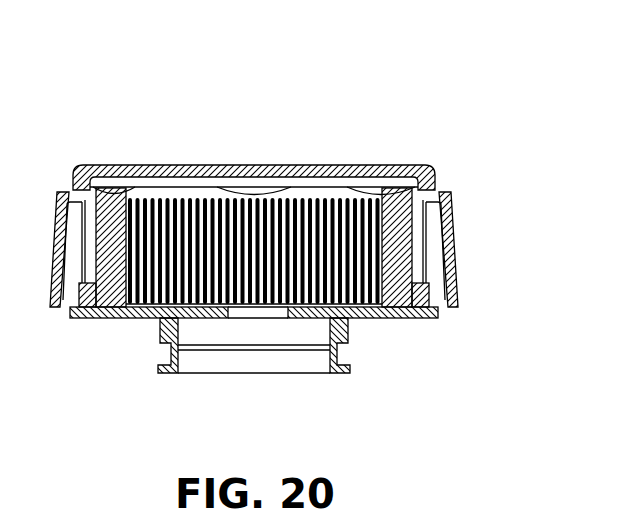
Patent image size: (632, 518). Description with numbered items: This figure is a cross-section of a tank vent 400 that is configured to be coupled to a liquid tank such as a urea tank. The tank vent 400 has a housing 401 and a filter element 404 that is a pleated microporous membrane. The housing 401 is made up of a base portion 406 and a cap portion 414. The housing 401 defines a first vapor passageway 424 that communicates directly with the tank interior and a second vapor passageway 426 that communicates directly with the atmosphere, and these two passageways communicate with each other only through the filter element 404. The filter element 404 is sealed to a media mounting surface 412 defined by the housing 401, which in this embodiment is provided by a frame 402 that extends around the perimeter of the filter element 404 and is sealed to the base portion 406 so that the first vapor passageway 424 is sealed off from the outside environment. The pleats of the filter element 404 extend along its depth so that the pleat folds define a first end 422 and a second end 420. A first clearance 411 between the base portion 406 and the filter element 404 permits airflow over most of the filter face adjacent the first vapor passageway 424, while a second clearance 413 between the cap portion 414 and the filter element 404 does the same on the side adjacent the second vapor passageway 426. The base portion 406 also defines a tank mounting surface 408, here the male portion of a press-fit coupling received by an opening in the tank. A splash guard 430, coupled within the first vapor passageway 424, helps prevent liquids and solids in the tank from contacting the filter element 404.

The tank vent 400 is at (210, 60).
The housing 401 is at (50, 232).
The frame 402 is at (417, 200).
The filter element 404 is at (171, 198).
The base portion 406 is at (158, 331).
The tank mounting surface 408 is at (356, 353).
The first clearance 411 is at (196, 300).
The media mounting surface 412 is at (133, 193).
The second clearance 413 is at (325, 182).
The cap portion 414 is at (263, 165).
The second end 420 is at (297, 200).
The first end 422 is at (348, 303).
The first vapor passageway 424 is at (285, 361).
The second vapor passageway 426 is at (69, 303).
The splash guard 430 is at (202, 348).